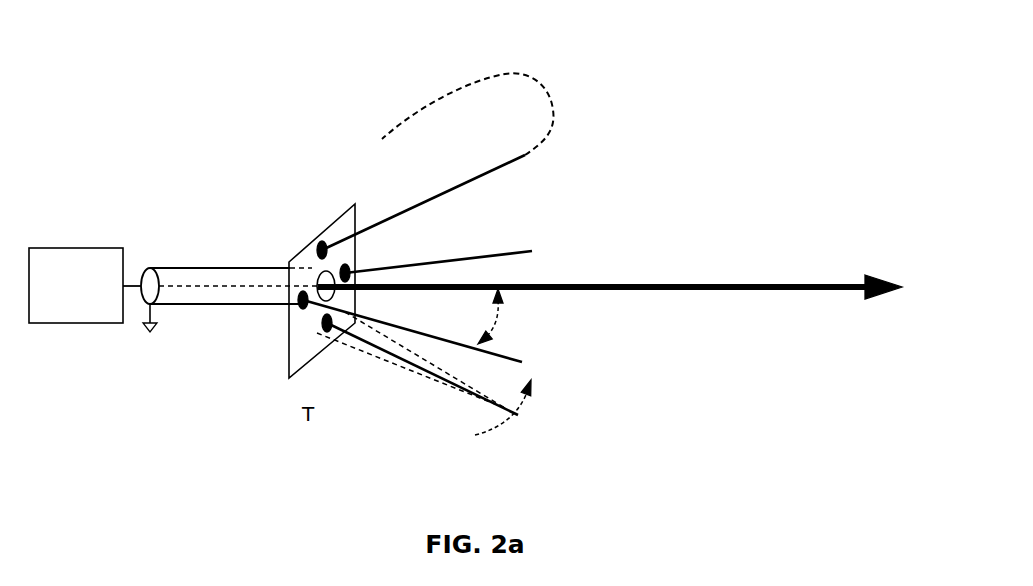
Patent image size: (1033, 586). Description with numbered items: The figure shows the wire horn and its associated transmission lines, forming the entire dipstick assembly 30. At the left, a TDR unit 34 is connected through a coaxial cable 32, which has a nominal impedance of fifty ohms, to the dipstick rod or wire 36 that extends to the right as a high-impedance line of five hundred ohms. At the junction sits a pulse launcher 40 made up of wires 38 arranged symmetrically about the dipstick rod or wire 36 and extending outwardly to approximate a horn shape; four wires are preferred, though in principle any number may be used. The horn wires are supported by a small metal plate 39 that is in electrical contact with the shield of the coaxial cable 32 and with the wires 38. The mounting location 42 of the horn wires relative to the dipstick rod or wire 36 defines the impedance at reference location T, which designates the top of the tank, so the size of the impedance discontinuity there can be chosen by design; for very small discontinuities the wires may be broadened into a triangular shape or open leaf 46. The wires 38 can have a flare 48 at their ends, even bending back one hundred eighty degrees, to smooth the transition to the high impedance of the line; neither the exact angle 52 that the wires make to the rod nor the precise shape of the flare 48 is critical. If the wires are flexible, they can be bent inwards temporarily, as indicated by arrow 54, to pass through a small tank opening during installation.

The dipstick assembly 30 is at (160, 128).
The coaxial cable 32 is at (185, 305).
The TDR unit 34 is at (63, 323).
The dipstick rod or wire 36 is at (685, 290).
The wires 38 is at (498, 252).
The metal plate 39 is at (337, 220).
The pulse launcher 40 is at (670, 461).
The mounting location 42 is at (289, 312).
The triangular shape (or open leaf) 46 is at (362, 350).
The flare 48 is at (543, 88).
The angle 52 is at (502, 320).
The arrow 54 is at (513, 422).